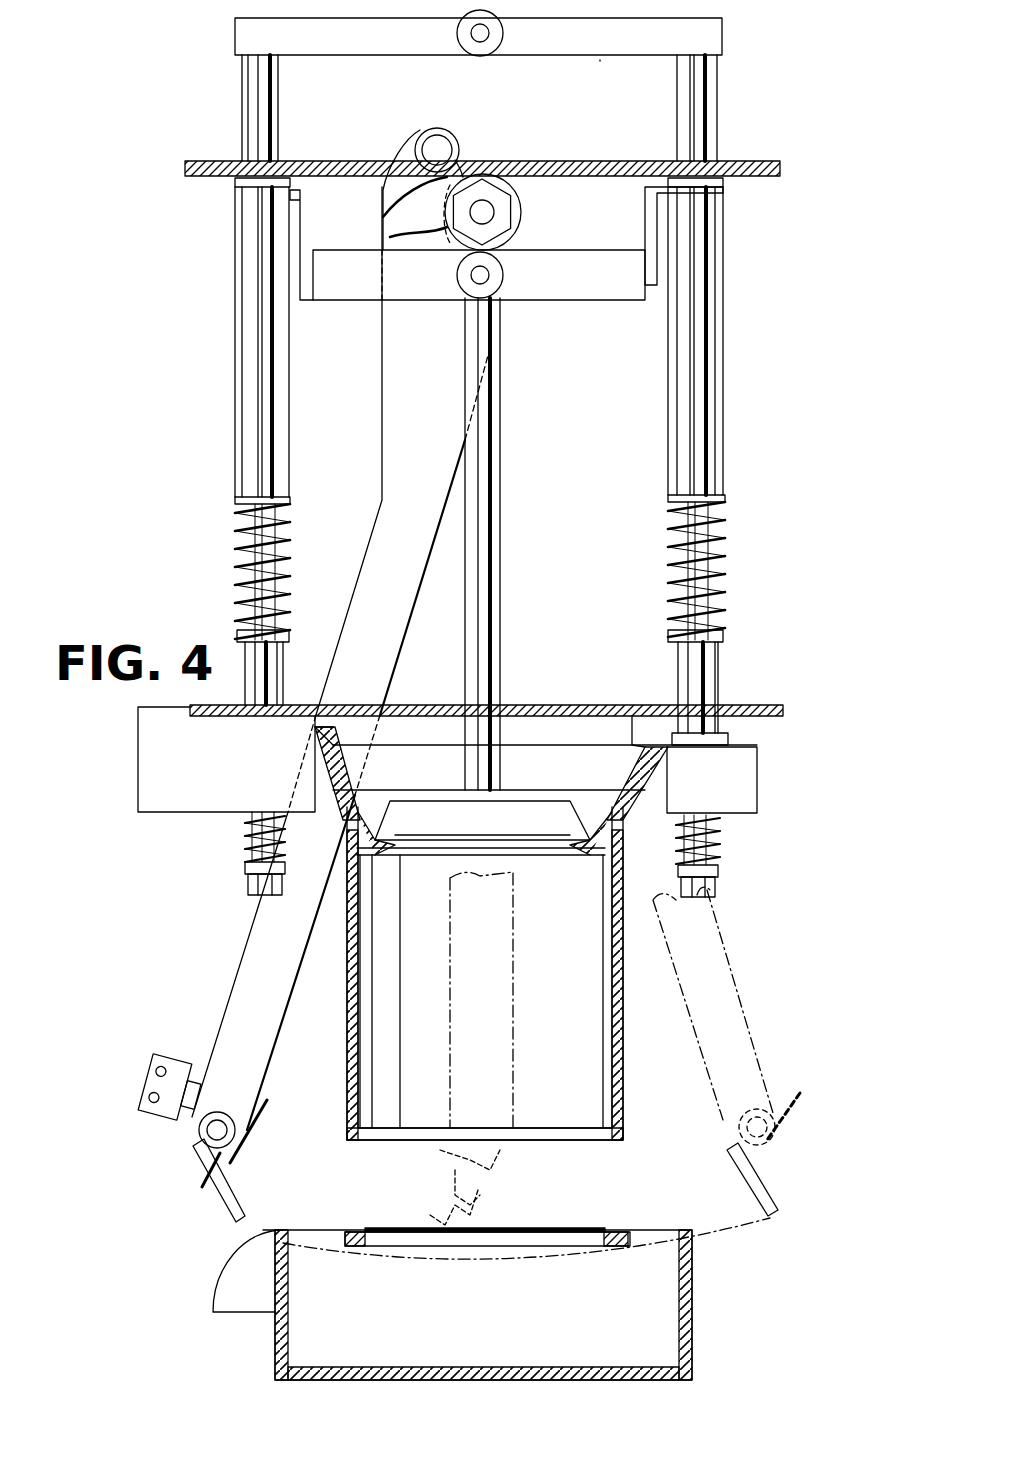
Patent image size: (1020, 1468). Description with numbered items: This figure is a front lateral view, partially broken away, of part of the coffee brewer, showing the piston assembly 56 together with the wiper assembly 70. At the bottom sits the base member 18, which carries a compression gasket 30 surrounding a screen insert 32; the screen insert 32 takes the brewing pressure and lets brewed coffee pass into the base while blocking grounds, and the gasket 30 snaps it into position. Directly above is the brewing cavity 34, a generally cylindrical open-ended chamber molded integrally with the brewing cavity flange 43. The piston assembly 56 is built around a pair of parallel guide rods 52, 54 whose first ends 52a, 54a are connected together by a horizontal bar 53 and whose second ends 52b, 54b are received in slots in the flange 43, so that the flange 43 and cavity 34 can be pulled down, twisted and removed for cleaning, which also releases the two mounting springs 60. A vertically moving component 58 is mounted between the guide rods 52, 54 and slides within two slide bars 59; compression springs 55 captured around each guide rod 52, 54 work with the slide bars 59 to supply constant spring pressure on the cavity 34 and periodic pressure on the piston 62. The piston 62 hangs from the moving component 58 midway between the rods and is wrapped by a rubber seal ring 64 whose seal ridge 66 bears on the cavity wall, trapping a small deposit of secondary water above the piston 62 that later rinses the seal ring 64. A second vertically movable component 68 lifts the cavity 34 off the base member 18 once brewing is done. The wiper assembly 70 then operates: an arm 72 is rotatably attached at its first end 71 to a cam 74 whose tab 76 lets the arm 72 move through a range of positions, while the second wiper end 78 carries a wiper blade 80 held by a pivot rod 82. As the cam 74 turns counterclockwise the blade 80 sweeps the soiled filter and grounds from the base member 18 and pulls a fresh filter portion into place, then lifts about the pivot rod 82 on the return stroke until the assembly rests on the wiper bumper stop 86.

The base member 18 is at (275, 1248).
The compression gasket 30 is at (612, 1236).
The screen insert 32 is at (548, 1232).
The brewing cavity 34 is at (623, 995).
The brewing cavity flange 43 is at (150, 748).
The guide rod 52 is at (246, 655).
The first end of guide rod 52a is at (242, 103).
The second end of guide rod 52b is at (246, 882).
The horizontal bar 53 is at (608, 101).
The guide rod 54 is at (722, 662).
The first end of guide rod 54a is at (713, 88).
The second end of guide rod 54b is at (718, 878).
The compression springs 55 is at (235, 588).
The piston assembly 56 is at (488, 508).
The vertically moving component 58 is at (352, 292).
The slide bars 59 is at (235, 400).
The mounting springs 60 is at (250, 845).
The piston 62 is at (375, 850).
The seal ring 64 is at (540, 842).
The seal ridge 66 is at (645, 810).
The second vertically movable component 68 is at (565, 42).
The wiper assembly 70 is at (250, 995).
The first end of arm 71 is at (418, 137).
The arm 72 is at (402, 472).
The cam 74 is at (463, 176).
The tab 76 is at (397, 212).
The second wiper end 78 is at (200, 1137).
The wiper blade 80 is at (228, 1205).
The pivot rod 82 is at (216, 1112).
The wiper bumper stop 86 is at (190, 1062).